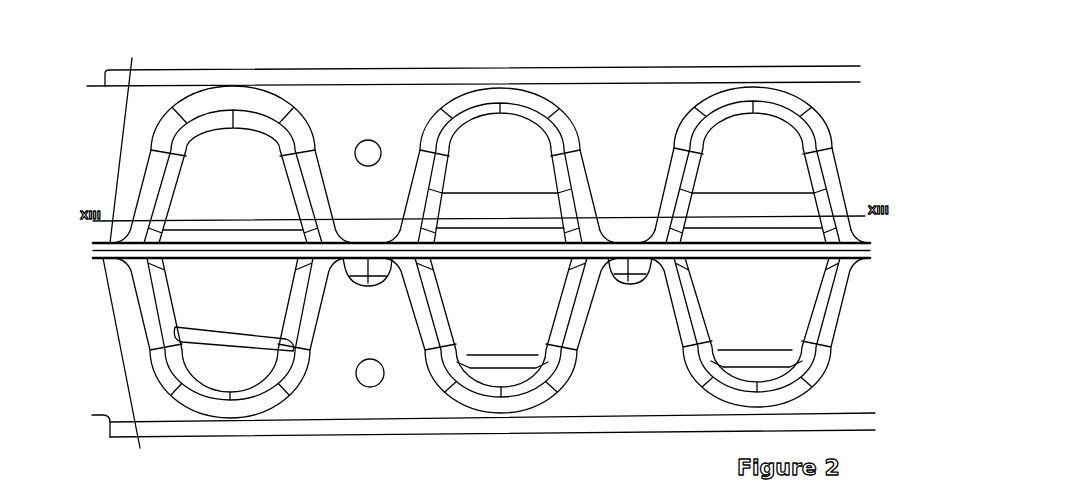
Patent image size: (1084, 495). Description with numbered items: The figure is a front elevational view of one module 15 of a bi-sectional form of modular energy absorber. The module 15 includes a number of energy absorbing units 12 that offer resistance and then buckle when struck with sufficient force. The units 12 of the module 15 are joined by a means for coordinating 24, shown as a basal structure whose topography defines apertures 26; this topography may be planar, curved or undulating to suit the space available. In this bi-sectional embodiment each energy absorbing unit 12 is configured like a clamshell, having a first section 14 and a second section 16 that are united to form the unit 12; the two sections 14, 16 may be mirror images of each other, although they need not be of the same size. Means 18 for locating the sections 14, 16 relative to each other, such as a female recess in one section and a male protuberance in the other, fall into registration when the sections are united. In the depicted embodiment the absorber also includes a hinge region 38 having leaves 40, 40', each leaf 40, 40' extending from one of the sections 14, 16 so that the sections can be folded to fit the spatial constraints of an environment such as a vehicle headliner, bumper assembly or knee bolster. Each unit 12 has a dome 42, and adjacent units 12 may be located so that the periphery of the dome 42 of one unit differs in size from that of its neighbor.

The energy absorbing unit 12 is at (455, 355).
The first section 14 is at (328, 122).
The module 15 is at (569, 78).
The second section 16 is at (397, 388).
The means for locating the sections 18 is at (360, 283).
The means for coordinating 24 is at (648, 292).
The aperture 26 is at (372, 148).
The hinge region 38 is at (651, 250).
The leaf 40 is at (129, 141).
The leaf 40' is at (131, 366).
The dome 42 is at (500, 172).